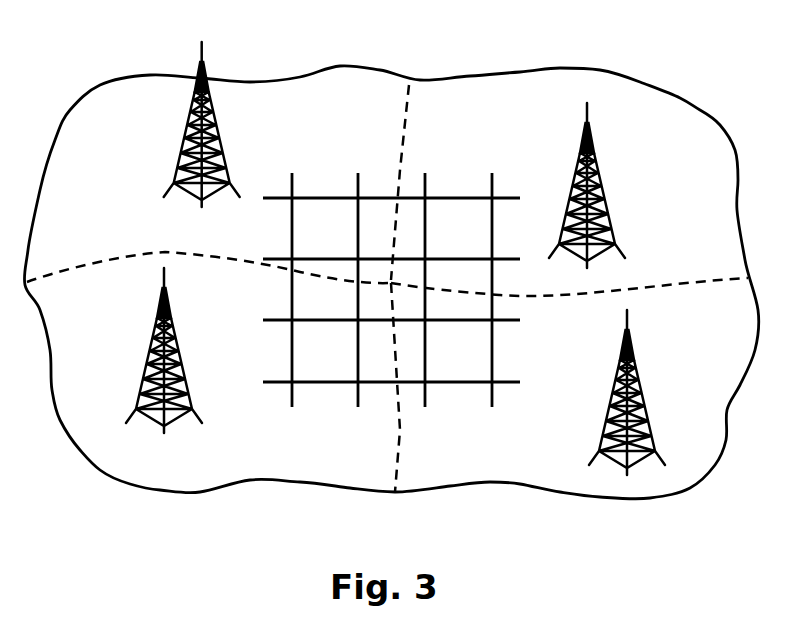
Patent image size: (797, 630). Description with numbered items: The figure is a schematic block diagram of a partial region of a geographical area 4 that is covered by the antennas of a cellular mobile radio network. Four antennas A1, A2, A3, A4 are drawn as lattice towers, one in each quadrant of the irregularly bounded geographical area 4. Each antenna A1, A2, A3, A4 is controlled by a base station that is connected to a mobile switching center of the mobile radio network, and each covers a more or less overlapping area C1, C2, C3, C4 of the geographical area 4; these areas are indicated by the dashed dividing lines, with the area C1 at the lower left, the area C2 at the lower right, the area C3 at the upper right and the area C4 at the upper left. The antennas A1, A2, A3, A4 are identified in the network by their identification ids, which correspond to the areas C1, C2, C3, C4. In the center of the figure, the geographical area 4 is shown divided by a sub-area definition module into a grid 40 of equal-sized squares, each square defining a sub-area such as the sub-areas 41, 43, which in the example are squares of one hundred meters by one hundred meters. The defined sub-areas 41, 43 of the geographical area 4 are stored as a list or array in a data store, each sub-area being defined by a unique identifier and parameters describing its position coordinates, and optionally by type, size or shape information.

The geographical area 4 is at (695, 487).
The grid 40 is at (266, 405).
The sub-area 41 is at (323, 212).
The sub-area 43 is at (452, 212).
The antenna A1 is at (148, 417).
The antenna A2 is at (645, 405).
The antenna A3 is at (613, 213).
The antenna A4 is at (177, 150).
The area C1 is at (67, 393).
The area C2 is at (563, 480).
The area C3 is at (665, 107).
The area C4 is at (106, 101).